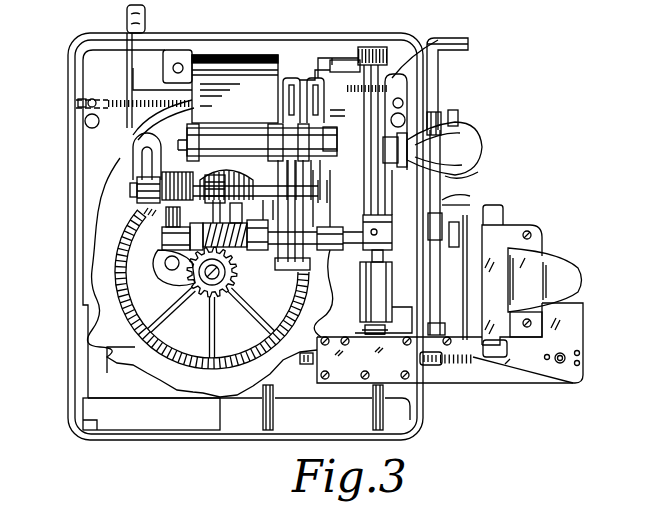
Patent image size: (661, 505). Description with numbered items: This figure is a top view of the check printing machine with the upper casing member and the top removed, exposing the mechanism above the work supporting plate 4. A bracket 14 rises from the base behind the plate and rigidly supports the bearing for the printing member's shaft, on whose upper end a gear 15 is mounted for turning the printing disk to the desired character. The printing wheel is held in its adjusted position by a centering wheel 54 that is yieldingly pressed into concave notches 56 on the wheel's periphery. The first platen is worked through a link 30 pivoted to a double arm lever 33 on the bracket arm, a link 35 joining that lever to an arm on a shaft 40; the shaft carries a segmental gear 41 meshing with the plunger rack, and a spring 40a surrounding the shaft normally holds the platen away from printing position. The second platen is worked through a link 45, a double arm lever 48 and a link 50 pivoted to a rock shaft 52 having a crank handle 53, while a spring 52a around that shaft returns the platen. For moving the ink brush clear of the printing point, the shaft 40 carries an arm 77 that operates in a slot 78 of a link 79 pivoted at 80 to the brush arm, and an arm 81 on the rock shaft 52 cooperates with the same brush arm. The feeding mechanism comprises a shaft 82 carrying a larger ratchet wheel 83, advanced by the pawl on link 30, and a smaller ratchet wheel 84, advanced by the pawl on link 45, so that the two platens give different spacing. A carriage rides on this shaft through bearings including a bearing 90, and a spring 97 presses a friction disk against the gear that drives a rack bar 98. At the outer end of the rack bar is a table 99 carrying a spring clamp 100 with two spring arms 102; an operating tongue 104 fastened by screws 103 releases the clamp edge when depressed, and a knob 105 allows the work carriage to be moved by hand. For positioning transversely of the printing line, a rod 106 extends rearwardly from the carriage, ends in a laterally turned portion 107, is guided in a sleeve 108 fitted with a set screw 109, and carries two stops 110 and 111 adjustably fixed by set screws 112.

The work supporting plate 4 is at (121, 10).
The bracket 14 is at (270, 55).
The gear 15 is at (205, 300).
The link 30 is at (325, 68).
The double arm lever 33 is at (320, 119).
The link 35 is at (320, 212).
The shaft 40 is at (237, 197).
The spring 40a is at (186, 180).
The segmental gear 41 is at (227, 169).
The link 45 is at (296, 76).
The double arm lever 48 is at (302, 168).
The link 50 is at (300, 267).
The rock shaft 52 is at (338, 249).
The spring 52a is at (240, 248).
The crank handle 53 is at (483, 144).
The centering wheel 54 is at (128, 158).
The concave notches 56 is at (193, 393).
The arm 77 is at (132, 182).
The slot 78 is at (124, 170).
The link 79 is at (143, 228).
The pivot 80 is at (165, 263).
The arm 81 is at (177, 226).
The shaft 82 is at (384, 137).
The ratchet wheel 83 is at (440, 41).
The ratchet wheel 84 is at (400, 62).
The bearing 90 is at (387, 276).
The spring 97 is at (366, 331).
The rack bar 98 is at (488, 378).
The table 99 is at (585, 306).
The spring clamp 100 is at (507, 263).
The spring arms 102 is at (505, 215).
The screws 103 is at (533, 235).
The operating tongue 104 is at (585, 273).
The knob 105 is at (566, 364).
The rod 106 is at (443, 196).
The laterally turned portion 107 is at (466, 50).
The sleeve 108 is at (470, 194).
The set screw 109 is at (480, 174).
The stop 110 is at (441, 116).
The stop 111 is at (443, 214).
The set screws 112 is at (459, 117).